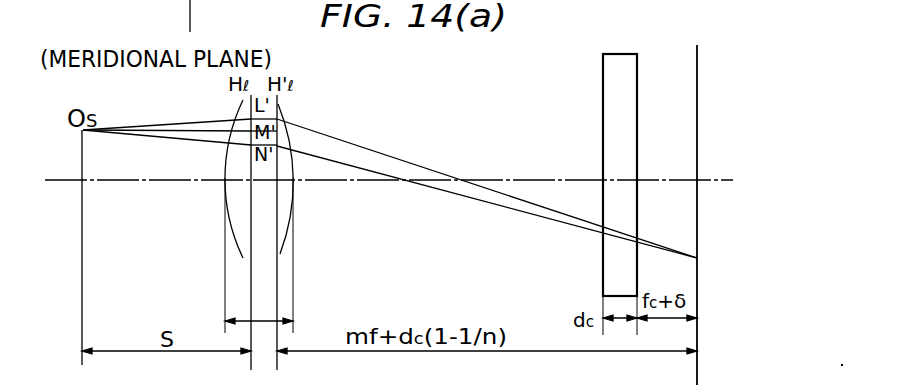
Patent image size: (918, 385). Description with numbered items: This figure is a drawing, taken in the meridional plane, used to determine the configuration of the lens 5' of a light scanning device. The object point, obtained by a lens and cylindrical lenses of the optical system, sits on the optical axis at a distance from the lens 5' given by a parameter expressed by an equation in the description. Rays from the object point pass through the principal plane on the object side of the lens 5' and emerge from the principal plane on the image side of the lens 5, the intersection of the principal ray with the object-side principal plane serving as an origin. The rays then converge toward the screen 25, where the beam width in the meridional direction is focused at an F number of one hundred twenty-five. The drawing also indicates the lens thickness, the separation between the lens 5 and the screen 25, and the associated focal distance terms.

The lens 5' is at (279, 179).
The lens 5 is at (272, 256).
The screen 25 is at (698, 72).